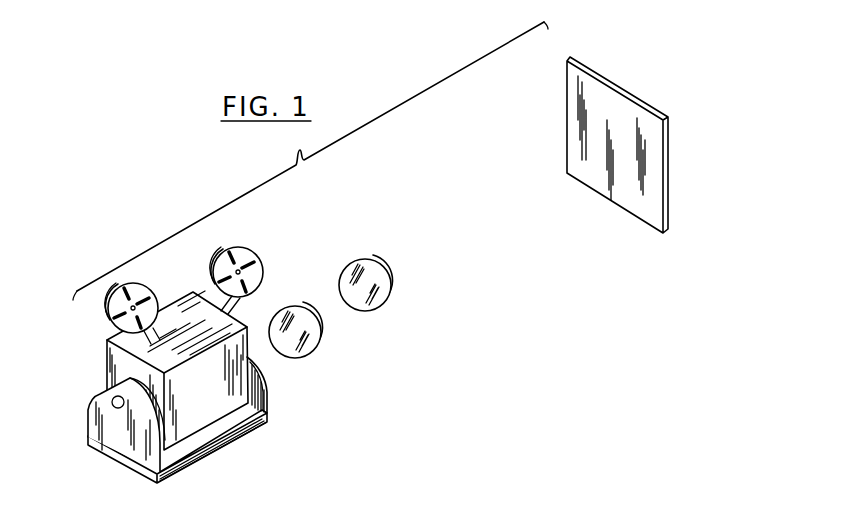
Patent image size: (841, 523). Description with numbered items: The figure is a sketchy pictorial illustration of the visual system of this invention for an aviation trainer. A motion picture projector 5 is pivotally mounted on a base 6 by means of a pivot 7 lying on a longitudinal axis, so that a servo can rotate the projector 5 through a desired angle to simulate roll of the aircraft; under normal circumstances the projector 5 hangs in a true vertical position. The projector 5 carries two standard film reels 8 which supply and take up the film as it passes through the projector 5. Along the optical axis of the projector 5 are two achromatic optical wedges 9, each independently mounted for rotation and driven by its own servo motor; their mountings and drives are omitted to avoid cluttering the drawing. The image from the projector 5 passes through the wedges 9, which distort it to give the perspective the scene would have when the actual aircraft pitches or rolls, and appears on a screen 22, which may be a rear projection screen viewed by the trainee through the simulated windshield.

The motion picture projector 5 is at (240, 383).
The base 6 is at (218, 437).
The pivot 7 is at (108, 395).
The film reels 8 is at (142, 289).
The optical wedges 9 is at (303, 318).
The screen 22 is at (578, 153).